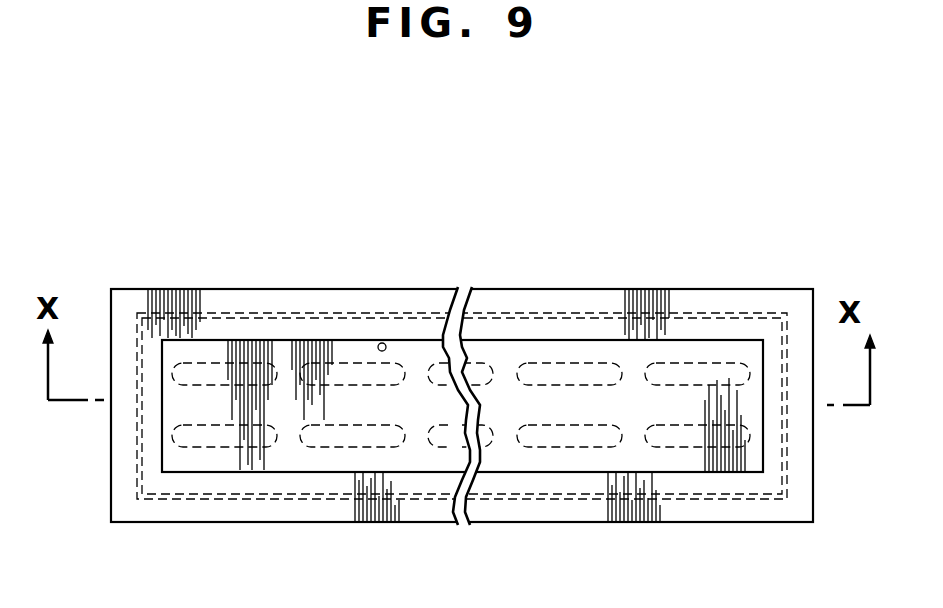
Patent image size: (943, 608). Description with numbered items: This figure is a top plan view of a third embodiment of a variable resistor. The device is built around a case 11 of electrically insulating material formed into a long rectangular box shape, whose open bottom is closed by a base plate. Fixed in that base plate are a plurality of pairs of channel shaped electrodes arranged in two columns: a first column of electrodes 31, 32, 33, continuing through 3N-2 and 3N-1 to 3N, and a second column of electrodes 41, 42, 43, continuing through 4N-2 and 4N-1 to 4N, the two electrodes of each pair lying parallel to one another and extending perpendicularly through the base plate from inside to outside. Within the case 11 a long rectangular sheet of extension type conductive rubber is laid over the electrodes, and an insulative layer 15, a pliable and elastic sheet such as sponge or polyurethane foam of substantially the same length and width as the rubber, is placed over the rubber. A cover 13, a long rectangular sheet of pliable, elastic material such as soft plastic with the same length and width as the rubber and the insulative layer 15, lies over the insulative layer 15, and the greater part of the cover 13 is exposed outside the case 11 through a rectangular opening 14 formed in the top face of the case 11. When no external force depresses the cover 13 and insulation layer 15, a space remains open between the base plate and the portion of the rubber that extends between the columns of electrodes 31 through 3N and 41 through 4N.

The case 11 is at (133, 297).
The cover 13 is at (530, 358).
The rectangular opening 14 is at (379, 343).
The insulative layer 15 is at (262, 318).
The channel shaped electrode 41 is at (215, 370).
The channel shaped electrode 42 is at (342, 372).
The channel shaped electrode 43 is at (438, 378).
The channel shaped electrode 4N-2 is at (497, 370).
The channel shaped electrode 4N-1 is at (588, 375).
The channel shaped electrode 4N is at (707, 373).
The channel shaped electrode 31 is at (217, 435).
The channel shaped electrode 32 is at (331, 440).
The channel shaped electrode 33 is at (442, 440).
The channel shaped electrode 3N-2 is at (492, 440).
The channel shaped electrode 3N-1 is at (581, 440).
The channel shaped electrode 3N is at (679, 440).